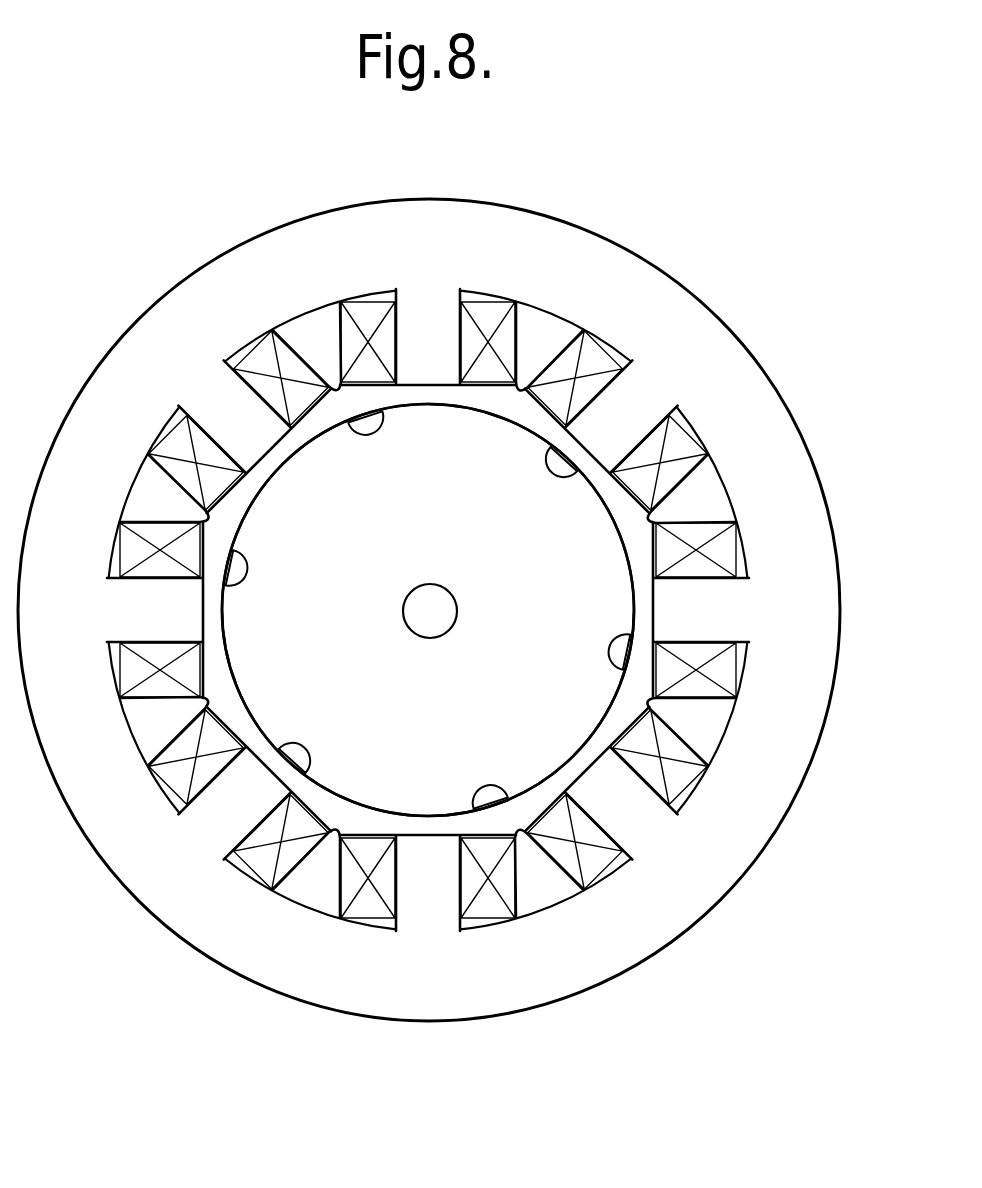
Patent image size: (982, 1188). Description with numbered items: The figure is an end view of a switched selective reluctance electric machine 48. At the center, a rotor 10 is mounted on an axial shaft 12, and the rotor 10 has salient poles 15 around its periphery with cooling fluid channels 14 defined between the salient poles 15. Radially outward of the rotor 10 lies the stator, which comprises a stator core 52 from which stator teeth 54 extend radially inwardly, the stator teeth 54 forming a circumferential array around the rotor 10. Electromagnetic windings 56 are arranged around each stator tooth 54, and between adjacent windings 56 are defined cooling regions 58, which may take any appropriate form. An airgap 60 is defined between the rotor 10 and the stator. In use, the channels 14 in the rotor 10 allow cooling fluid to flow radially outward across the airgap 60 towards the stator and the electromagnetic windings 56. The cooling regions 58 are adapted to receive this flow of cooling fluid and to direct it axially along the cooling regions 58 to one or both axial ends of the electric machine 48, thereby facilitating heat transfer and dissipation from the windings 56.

The switched selective reluctance electric machine 48 is at (175, 248).
The stator core 52 is at (673, 305).
The stator teeth 54 is at (717, 602).
The electromagnetic windings 56 is at (678, 778).
The cooling regions 58 is at (147, 500).
The airgap 60 is at (228, 689).
The rotor 10 is at (378, 564).
The salient poles 15 is at (550, 742).
The cooling fluid channels 14 is at (547, 462).
The axial shaft 12 is at (449, 630).